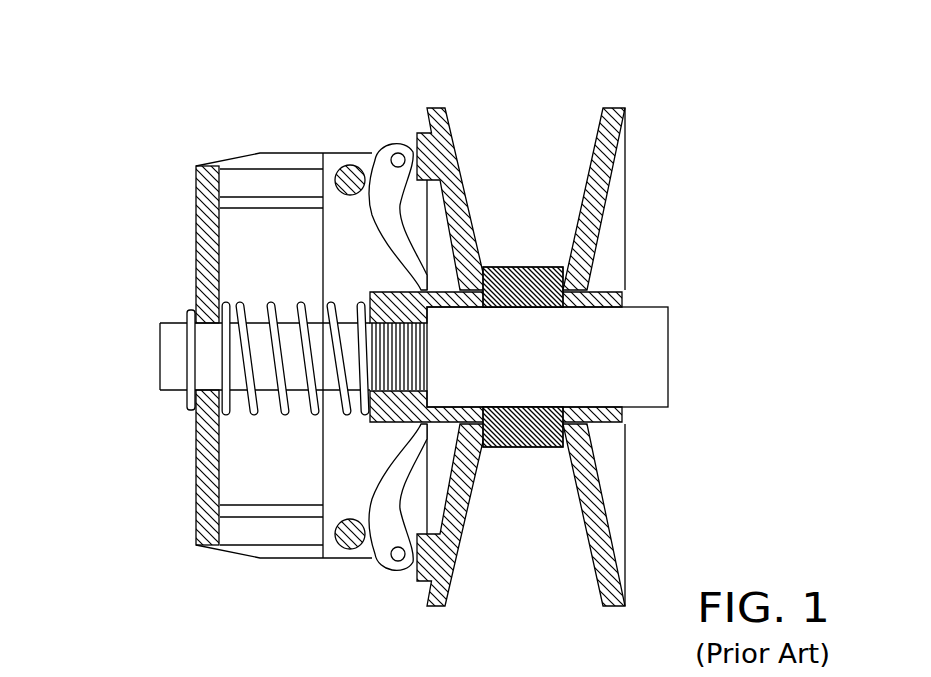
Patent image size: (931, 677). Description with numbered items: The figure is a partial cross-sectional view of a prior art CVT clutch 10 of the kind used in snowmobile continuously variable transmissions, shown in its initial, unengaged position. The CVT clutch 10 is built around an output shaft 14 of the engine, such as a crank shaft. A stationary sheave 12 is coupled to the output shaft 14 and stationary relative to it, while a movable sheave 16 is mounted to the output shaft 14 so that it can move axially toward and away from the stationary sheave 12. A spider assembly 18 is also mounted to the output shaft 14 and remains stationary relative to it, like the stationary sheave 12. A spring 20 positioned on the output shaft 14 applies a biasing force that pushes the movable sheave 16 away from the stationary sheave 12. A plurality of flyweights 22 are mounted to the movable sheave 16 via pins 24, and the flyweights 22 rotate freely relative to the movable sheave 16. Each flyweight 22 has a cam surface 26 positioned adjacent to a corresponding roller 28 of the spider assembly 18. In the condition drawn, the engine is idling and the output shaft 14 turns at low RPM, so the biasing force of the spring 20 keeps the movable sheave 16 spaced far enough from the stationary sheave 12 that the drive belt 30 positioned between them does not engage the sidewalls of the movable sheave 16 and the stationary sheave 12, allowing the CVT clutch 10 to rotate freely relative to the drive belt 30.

The CVT clutch 10 is at (103, 147).
The stationary sheave 12 is at (605, 548).
The output shaft 14 is at (592, 374).
The movable sheave 16 is at (437, 108).
The spider assembly 18 is at (340, 470).
The spring 20 is at (268, 312).
The flyweights 22 is at (385, 223).
The pins 24 is at (401, 152).
The cam surface 26 is at (360, 226).
The roller 28 is at (358, 167).
The drive belt 30 is at (545, 267).